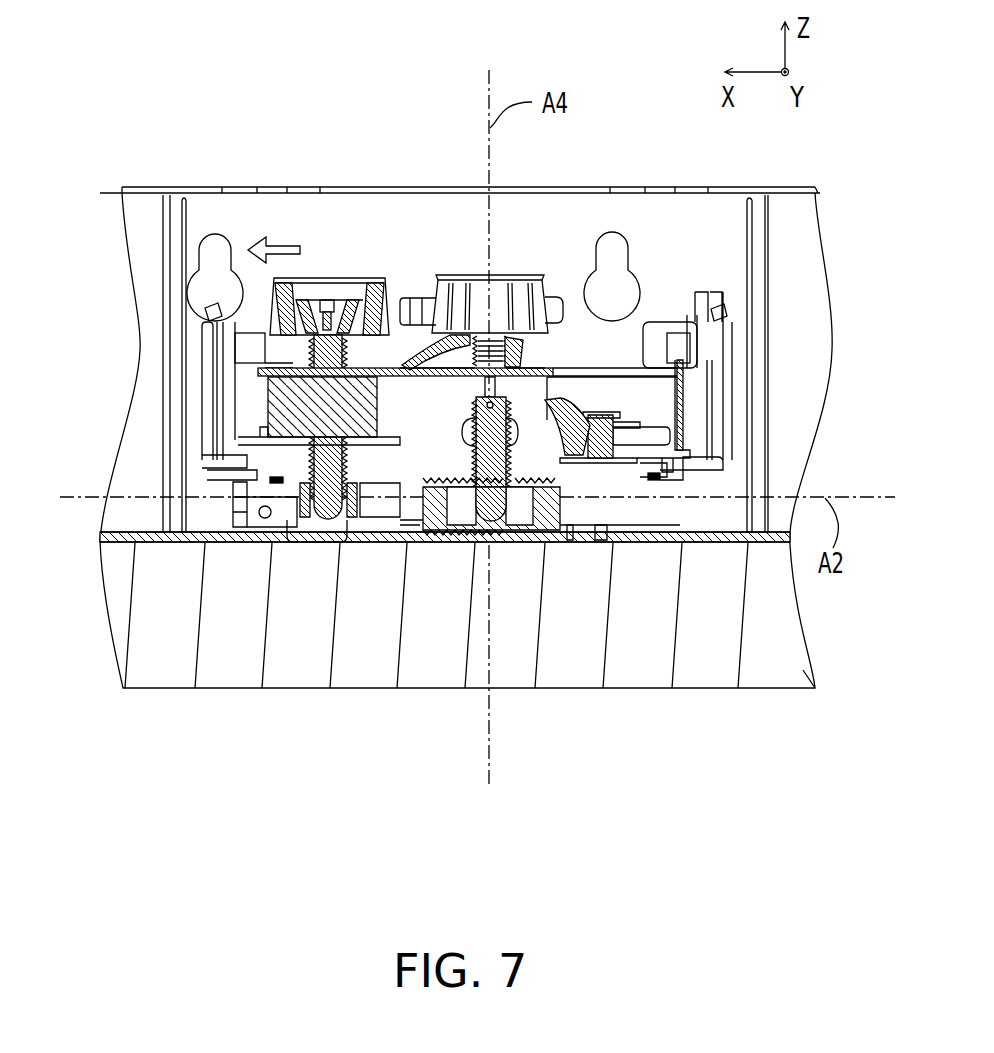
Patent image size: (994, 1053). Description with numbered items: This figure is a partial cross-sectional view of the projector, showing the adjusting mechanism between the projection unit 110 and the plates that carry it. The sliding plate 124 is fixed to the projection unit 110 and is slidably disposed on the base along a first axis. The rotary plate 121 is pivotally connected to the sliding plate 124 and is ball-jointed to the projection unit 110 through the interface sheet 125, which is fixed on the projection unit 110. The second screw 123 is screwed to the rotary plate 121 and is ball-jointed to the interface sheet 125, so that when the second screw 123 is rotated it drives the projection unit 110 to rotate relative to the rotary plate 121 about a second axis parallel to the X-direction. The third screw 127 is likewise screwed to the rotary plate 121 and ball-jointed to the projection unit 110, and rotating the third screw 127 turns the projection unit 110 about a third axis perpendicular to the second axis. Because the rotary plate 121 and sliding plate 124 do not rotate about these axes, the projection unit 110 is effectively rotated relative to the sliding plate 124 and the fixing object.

The projection unit 110 is at (775, 625).
The rotary plate 121 is at (565, 455).
The second screw 123 is at (460, 366).
The sliding plate 124 is at (680, 402).
The interface sheet 125 is at (762, 543).
The third screw 127 is at (325, 355).